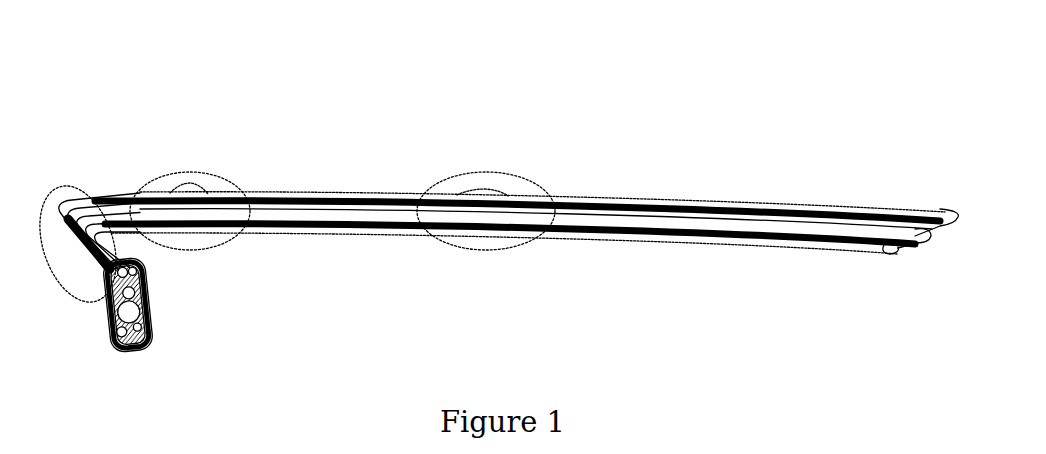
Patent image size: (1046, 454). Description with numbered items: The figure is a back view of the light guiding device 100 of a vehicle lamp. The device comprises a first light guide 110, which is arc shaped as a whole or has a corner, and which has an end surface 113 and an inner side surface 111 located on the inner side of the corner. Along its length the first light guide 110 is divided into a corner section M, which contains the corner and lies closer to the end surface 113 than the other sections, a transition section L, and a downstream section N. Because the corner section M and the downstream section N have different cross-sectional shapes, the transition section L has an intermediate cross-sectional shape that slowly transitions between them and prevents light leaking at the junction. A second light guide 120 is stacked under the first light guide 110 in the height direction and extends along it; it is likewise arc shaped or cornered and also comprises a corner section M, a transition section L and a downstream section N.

The light guiding device 100 is at (449, 102).
The first light guide 110 is at (708, 205).
The inner side surface 111 is at (356, 192).
The end surface 113 is at (150, 288).
The second light guide 120 is at (707, 238).
The corner section M is at (77, 188).
The transition section L is at (235, 183).
The downstream section N is at (541, 184).